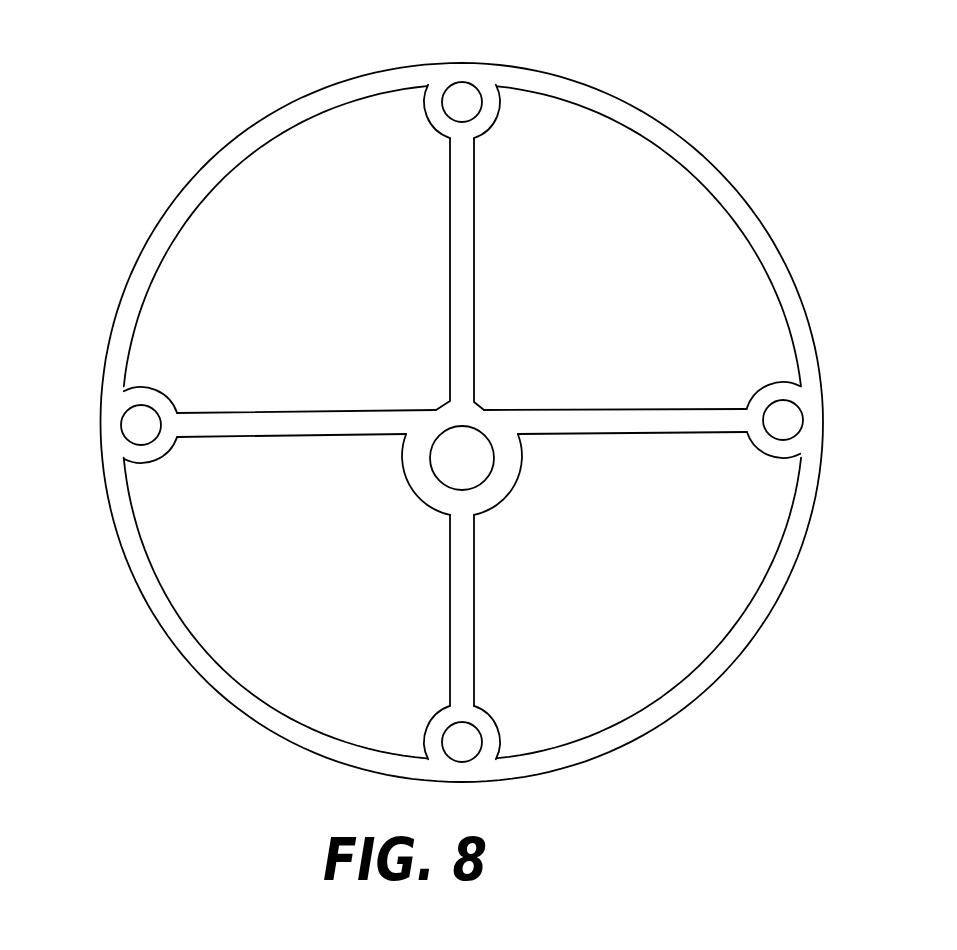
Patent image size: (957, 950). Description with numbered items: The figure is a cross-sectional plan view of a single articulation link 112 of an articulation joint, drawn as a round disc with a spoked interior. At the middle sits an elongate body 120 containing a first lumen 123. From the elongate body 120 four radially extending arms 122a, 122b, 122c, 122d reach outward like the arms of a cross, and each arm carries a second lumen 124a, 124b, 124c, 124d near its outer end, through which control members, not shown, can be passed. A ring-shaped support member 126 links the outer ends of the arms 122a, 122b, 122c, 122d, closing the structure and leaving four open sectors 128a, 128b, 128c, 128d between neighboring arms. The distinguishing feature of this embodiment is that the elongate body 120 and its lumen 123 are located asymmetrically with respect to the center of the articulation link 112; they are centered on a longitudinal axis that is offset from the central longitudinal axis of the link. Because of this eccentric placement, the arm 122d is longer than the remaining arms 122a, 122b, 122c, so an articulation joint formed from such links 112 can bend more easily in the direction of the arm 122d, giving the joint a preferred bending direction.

The articulation link 112 is at (784, 258).
The support member 126 is at (190, 203).
The elongate body 120 is at (492, 414).
The first lumen 123 is at (482, 473).
The radially extending arm 122a is at (255, 412).
The radially extending arm 122b is at (465, 643).
The radially extending arm 122c is at (695, 433).
The radially extending arm 122d is at (453, 225).
The second lumen 124a is at (148, 446).
The second lumen 124b is at (479, 753).
The second lumen 124c is at (804, 419).
The second lumen 124d is at (464, 104).
The opening / quadrant (upper left) 128a is at (392, 217).
The opening / quadrant (lower left) 128b is at (290, 536).
The opening / quadrant (lower right) 128c is at (617, 669).
The opening / quadrant (upper right) 128d is at (738, 359).